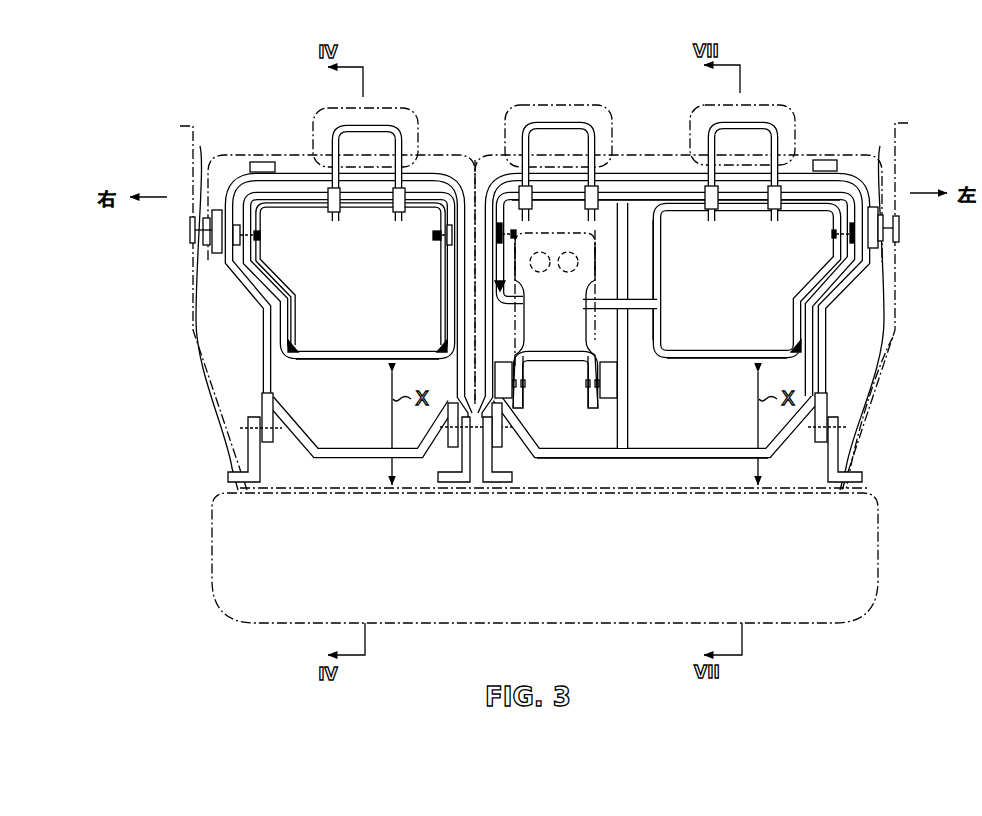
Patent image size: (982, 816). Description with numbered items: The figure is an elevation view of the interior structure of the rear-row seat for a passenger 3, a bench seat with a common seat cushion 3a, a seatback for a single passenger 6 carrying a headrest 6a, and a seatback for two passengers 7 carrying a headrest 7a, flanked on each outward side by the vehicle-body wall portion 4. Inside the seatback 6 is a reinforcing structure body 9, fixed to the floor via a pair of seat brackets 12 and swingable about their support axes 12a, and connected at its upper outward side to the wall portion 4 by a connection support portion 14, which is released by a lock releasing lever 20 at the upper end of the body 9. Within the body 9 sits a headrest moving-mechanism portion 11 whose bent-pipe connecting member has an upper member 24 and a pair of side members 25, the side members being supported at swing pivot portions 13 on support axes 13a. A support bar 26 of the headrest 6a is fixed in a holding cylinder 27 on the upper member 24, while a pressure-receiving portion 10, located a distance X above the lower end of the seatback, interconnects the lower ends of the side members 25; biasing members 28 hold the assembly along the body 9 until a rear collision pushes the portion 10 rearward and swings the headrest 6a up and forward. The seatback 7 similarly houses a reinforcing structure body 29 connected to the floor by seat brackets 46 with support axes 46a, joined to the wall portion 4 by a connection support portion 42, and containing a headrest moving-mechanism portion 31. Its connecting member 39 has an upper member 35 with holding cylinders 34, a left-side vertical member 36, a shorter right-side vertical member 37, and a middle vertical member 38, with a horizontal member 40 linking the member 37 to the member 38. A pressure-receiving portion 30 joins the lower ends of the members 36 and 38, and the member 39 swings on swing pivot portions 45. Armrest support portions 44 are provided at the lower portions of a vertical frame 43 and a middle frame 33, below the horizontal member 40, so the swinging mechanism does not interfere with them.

The seat for a passenger 3 is at (860, 141).
The seat cushion 3a is at (878, 500).
The vehicle-body wall portion 4 is at (190, 166).
The seatback for a single passenger 6 is at (440, 146).
The headrest 6a is at (318, 108).
The seatback for two passengers 7 is at (870, 333).
The headrest 7a is at (587, 105).
The reinforcing structure body 9 is at (258, 332).
The pressure-receiving portion 10 is at (363, 360).
The headrest moving-mechanism portion 11 is at (445, 186).
The seat bracket 12 is at (248, 452).
The support axis 12a is at (262, 420).
The swing pivot portion 13 is at (237, 247).
The support axis 13a is at (260, 224).
The connection support portion 14 is at (186, 238).
The lock releasing lever 20 is at (262, 162).
The upper member 24 is at (292, 194).
The side member 25 is at (295, 313).
The support bar 26 is at (336, 175).
The holding cylinder 27 is at (397, 205).
The biasing member 28 is at (286, 350).
The reinforcing structure body 29 is at (872, 276).
The pressure-receiving portion 30 is at (717, 362).
The headrest moving-mechanism portion 31 is at (672, 244).
The middle frame 33 is at (630, 423).
The holding cylinder 34 is at (590, 196).
The upper member 35 is at (677, 195).
The left-side vertical member 36 is at (800, 304).
The right-side vertical member 37 is at (526, 272).
The middle vertical member 38 is at (668, 282).
The connecting member 39 is at (668, 464).
The horizontal member 40 is at (640, 310).
The connection support portion 42 is at (910, 226).
The vertical frame 43 is at (490, 332).
The armrest support portion 44 is at (503, 392).
The swing pivot portion 45 is at (512, 233).
The seat bracket 46 is at (490, 482).
The support axis 46a is at (502, 446).